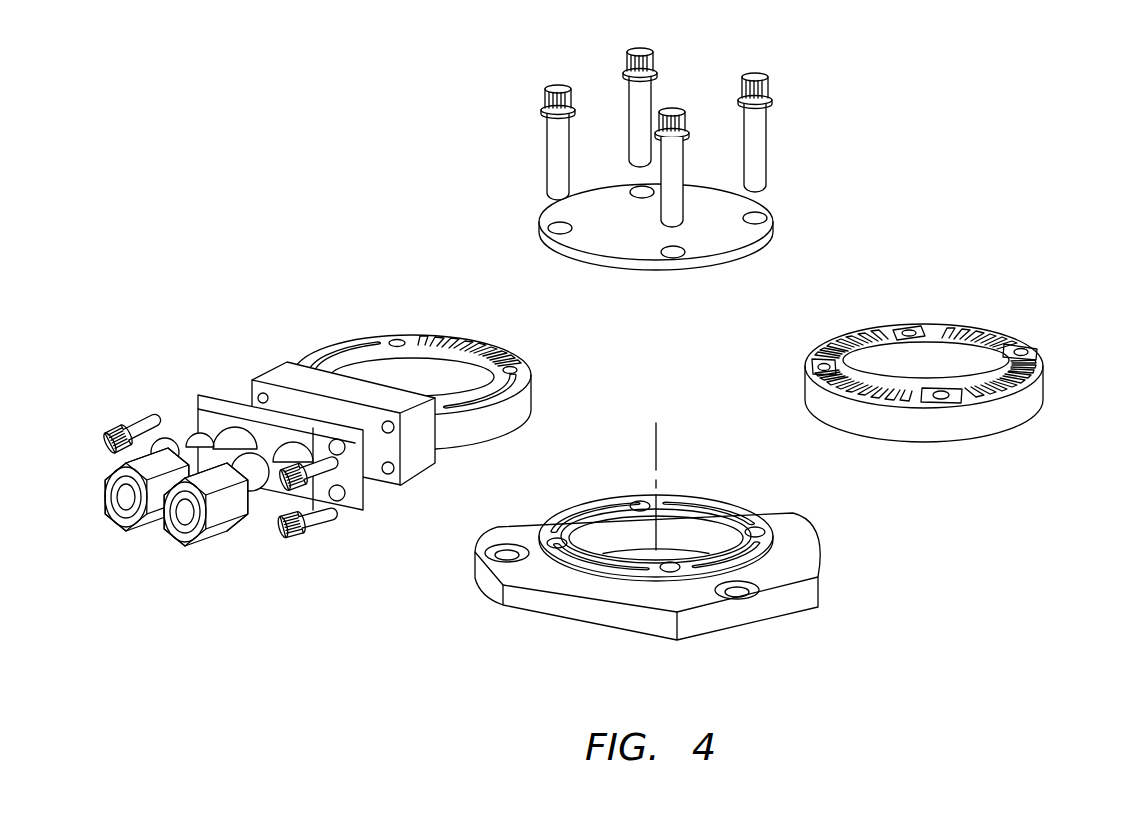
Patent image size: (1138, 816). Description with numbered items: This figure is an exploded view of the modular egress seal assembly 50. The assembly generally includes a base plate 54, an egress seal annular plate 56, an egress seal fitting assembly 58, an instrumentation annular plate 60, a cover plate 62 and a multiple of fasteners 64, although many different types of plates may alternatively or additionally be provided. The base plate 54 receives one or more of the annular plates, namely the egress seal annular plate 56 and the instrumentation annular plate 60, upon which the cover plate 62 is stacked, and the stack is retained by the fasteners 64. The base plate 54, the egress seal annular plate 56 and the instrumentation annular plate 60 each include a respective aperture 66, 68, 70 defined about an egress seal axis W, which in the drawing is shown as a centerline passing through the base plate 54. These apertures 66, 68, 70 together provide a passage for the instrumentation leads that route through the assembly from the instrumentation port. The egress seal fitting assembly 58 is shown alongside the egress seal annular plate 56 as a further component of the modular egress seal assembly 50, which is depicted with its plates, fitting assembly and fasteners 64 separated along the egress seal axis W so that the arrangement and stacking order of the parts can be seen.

The modular egress seal assembly 50 is at (963, 173).
The base plate 54 is at (699, 586).
The egress seal annular plate 56 is at (391, 381).
The egress seal fitting assembly 58 is at (346, 520).
The instrumentation annular plate 60 is at (966, 360).
The cover plate 62 is at (761, 253).
The fasteners 64 is at (789, 146).
The aperture 66 is at (622, 538).
The aperture 68 is at (427, 380).
The aperture 70 is at (940, 358).
The egress seal axis W is at (655, 450).